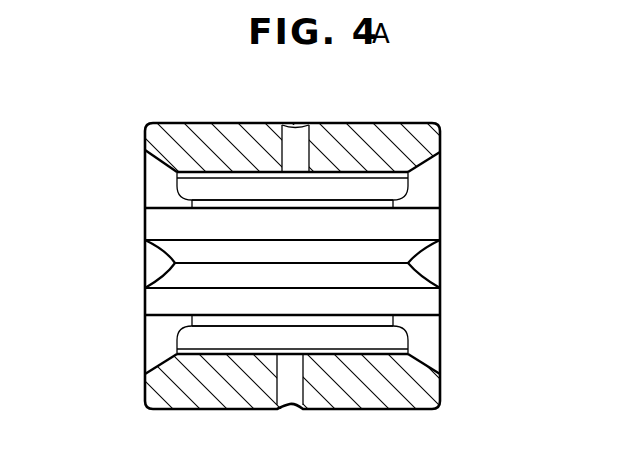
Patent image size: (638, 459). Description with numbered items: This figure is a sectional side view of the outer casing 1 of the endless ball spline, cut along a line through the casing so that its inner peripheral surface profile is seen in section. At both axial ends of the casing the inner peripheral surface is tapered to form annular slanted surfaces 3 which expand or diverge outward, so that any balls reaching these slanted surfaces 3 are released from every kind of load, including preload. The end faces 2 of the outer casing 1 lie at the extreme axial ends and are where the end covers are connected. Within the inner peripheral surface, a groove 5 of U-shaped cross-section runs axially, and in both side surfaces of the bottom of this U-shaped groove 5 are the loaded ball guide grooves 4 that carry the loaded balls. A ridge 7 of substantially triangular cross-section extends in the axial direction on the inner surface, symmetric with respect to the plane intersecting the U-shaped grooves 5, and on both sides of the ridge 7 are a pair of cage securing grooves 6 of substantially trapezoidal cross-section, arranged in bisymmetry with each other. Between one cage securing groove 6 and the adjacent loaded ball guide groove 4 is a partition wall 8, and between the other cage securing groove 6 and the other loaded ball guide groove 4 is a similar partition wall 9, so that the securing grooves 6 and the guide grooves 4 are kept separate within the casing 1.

The outer casing 1 is at (234, 120).
The end face 2 is at (142, 133).
The annular slanted surface 3 is at (162, 168).
The loaded ball guide groove 4 is at (278, 188).
The U-shaped groove 5 is at (358, 170).
The cage securing groove 6 is at (430, 228).
The ridge 7 is at (390, 263).
The partition wall 8 is at (393, 206).
The partition wall 9 is at (392, 322).